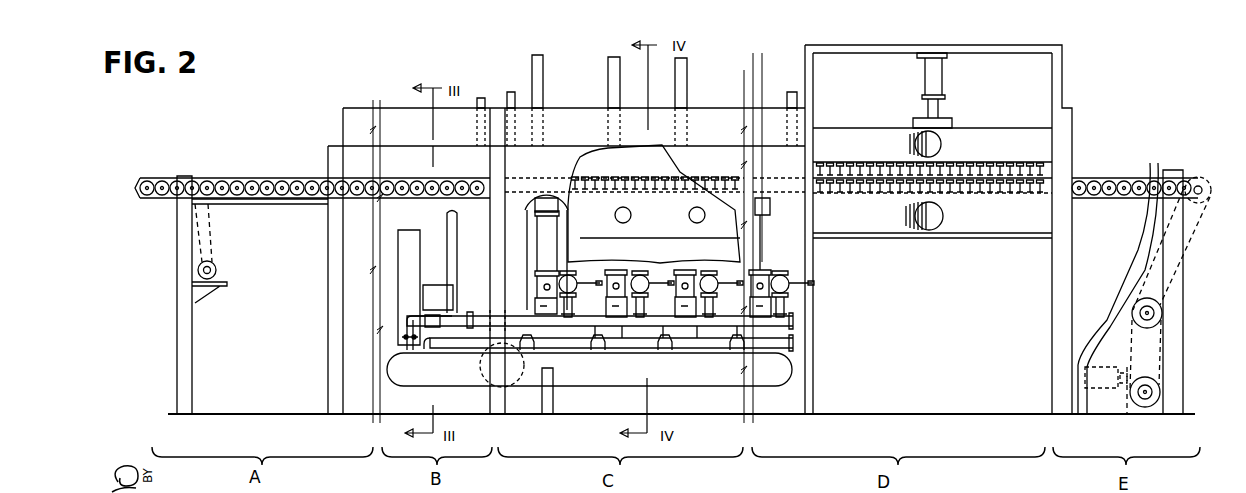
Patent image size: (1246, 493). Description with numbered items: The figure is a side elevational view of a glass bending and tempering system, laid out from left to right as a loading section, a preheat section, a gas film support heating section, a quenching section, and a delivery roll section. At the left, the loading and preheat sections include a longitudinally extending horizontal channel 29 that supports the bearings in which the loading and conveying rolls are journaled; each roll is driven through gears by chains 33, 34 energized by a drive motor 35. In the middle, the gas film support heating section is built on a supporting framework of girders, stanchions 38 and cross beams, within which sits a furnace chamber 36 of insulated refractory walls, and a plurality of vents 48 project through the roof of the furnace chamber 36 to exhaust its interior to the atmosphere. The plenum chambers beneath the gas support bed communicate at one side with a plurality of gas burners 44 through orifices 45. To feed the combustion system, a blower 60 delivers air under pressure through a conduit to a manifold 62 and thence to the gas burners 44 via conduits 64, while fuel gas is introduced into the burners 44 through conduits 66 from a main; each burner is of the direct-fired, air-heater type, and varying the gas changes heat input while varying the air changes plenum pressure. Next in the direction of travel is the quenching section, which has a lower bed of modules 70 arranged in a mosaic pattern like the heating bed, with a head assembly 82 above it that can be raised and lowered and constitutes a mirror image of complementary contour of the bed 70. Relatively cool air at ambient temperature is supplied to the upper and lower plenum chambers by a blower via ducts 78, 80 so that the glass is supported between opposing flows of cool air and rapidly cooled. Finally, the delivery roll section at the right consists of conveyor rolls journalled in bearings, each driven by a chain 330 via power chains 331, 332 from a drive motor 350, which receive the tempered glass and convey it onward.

The horizontal channel 29 is at (247, 175).
The chain 33 is at (173, 198).
The chain 34 is at (210, 240).
The drive motor 35 is at (217, 268).
The furnace chamber 36 is at (646, 170).
The stanchion 38 is at (192, 368).
The gas burner 44 is at (547, 190).
The orifice 45 is at (689, 215).
The vent 48 is at (608, 82).
The blower 60 is at (409, 230).
The manifold 62 is at (616, 381).
The conduit 64 is at (547, 246).
The conduit 66 is at (578, 250).
The lower bed of modules 70 is at (951, 265).
The duct 78 is at (906, 216).
The duct 80 is at (910, 144).
The head assembly 82 is at (992, 112).
The chain 330 is at (1093, 182).
The power chain 331 is at (1192, 230).
The power chain 332 is at (1158, 340).
The drive motor 350 is at (1103, 367).